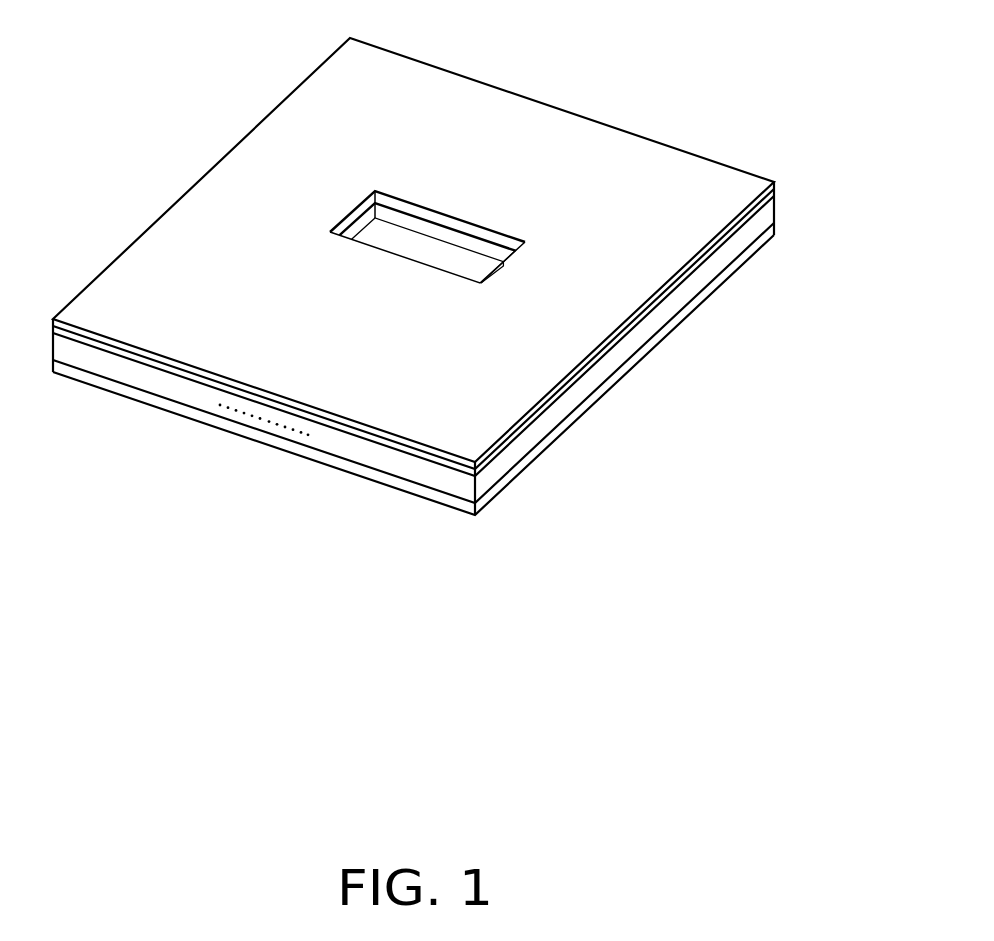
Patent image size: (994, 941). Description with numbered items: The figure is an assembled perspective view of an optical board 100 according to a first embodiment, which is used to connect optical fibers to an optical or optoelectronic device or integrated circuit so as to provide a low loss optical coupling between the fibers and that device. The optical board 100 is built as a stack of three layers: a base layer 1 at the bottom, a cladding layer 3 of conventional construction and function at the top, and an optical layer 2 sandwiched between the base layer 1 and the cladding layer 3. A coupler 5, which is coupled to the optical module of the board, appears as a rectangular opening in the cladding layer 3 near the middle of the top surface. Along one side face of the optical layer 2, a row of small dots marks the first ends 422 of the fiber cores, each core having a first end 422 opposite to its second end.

The optical board 100 is at (413, 272).
The cladding layer 3 is at (668, 178).
The optical layer 2 is at (643, 332).
The base layer 1 is at (577, 418).
The coupler 5 is at (445, 248).
The first end 422 is at (307, 434).